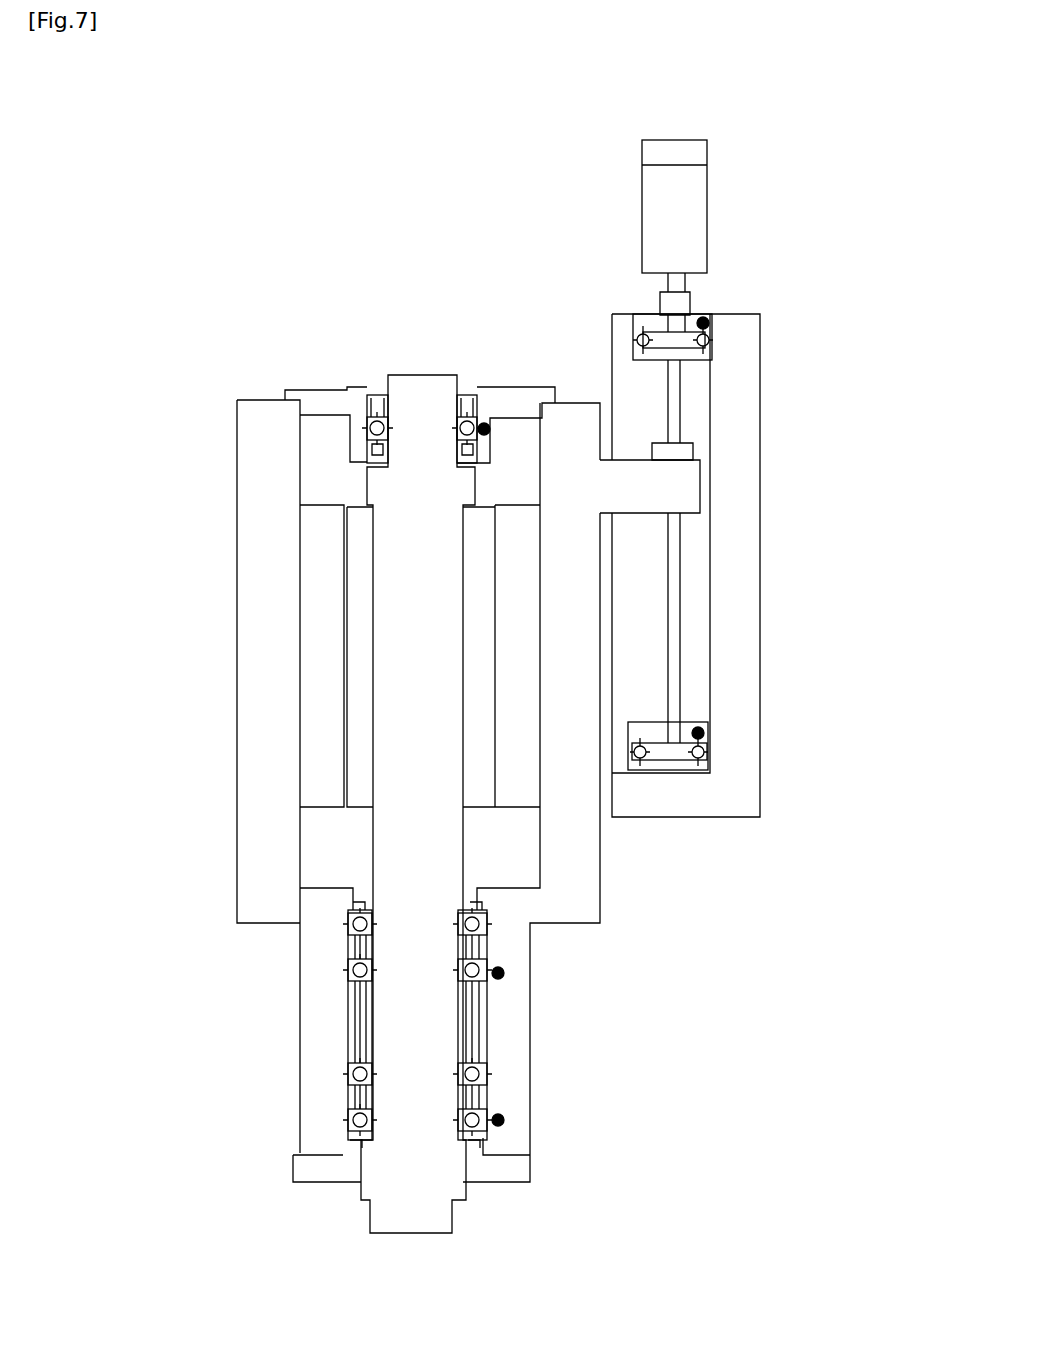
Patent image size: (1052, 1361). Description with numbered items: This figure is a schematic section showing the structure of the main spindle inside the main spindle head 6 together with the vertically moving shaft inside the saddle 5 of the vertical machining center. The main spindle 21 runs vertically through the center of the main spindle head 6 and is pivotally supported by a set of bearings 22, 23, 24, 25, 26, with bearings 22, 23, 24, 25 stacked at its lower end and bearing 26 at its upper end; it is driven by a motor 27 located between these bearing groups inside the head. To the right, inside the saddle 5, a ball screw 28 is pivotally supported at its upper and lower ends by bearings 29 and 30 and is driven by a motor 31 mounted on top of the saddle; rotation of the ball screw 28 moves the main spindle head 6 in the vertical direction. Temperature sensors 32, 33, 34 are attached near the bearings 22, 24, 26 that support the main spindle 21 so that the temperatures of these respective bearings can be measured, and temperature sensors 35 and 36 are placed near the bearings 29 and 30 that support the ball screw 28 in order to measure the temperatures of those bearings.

The saddle 5 is at (738, 576).
The main spindle head 6 is at (248, 549).
The main spindle 21 is at (413, 1165).
The bearing 22 is at (358, 1143).
The bearing 23 is at (352, 1088).
The bearing 24 is at (353, 982).
The bearing 25 is at (355, 946).
The bearing 26 is at (377, 418).
The motor 27 is at (322, 788).
The ball screw 28 is at (672, 640).
The bearing 29 is at (668, 753).
The bearing 30 is at (685, 350).
The motor 31 is at (688, 208).
The temperature sensor 32 is at (499, 1126).
The temperature sensor 33 is at (499, 979).
The temperature sensor 34 is at (484, 423).
The temperature sensor 35 is at (702, 738).
The temperature sensor 36 is at (706, 327).